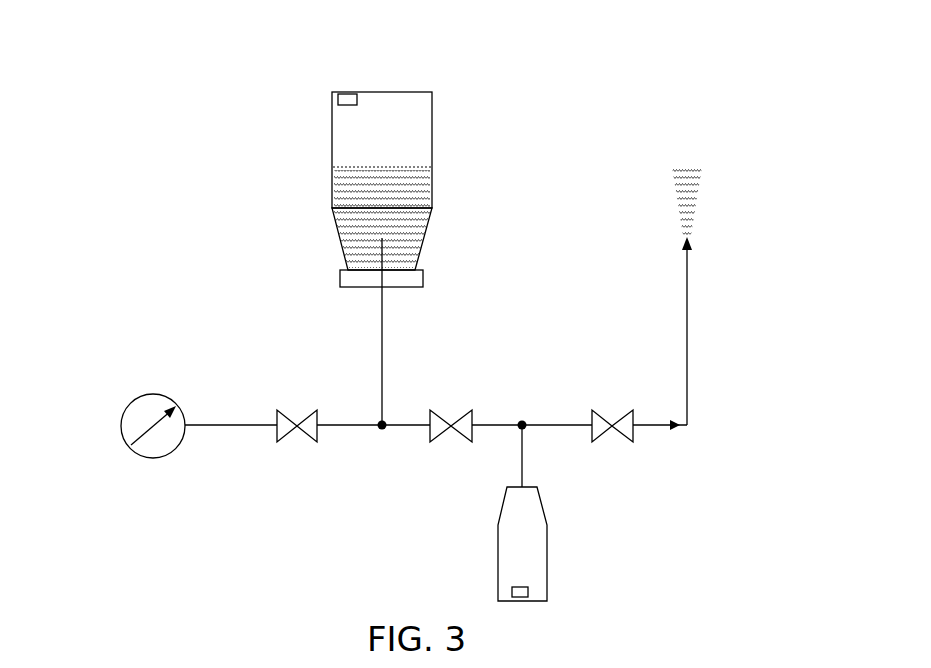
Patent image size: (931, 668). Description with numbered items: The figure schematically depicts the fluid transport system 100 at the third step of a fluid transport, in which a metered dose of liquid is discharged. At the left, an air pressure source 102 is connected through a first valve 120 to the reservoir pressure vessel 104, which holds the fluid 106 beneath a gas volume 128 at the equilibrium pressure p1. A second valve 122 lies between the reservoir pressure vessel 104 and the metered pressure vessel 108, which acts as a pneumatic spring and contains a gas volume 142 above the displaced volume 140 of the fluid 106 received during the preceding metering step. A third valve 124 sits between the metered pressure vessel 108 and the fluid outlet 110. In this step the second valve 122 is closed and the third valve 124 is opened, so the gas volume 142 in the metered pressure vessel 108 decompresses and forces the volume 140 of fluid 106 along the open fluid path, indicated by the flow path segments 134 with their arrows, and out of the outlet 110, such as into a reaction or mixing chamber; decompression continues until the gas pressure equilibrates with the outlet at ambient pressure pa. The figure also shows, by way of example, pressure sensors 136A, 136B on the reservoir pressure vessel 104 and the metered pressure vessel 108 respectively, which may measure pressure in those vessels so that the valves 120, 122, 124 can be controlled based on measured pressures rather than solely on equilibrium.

The fluid transport system 100 is at (256, 75).
The air pressure source 102 is at (121, 427).
The reservoir pressure vessel 104 is at (332, 97).
The fluid 106 is at (332, 180).
The metered pressure vessel 108 is at (547, 558).
The fluid outlet 110 is at (706, 302).
The first valve 120 is at (302, 440).
The second valve 122 is at (450, 418).
The third valve 124 is at (620, 440).
The gas volume of the reservoir pressure vessel 128 is at (412, 127).
The flow path segments 134 is at (662, 318).
The pressure sensor 136A is at (346, 93).
The pressure sensor 136B is at (512, 592).
The displaced volume of fluid 140 is at (698, 200).
The gas volume of the metered pressure vessel 142 is at (508, 556).